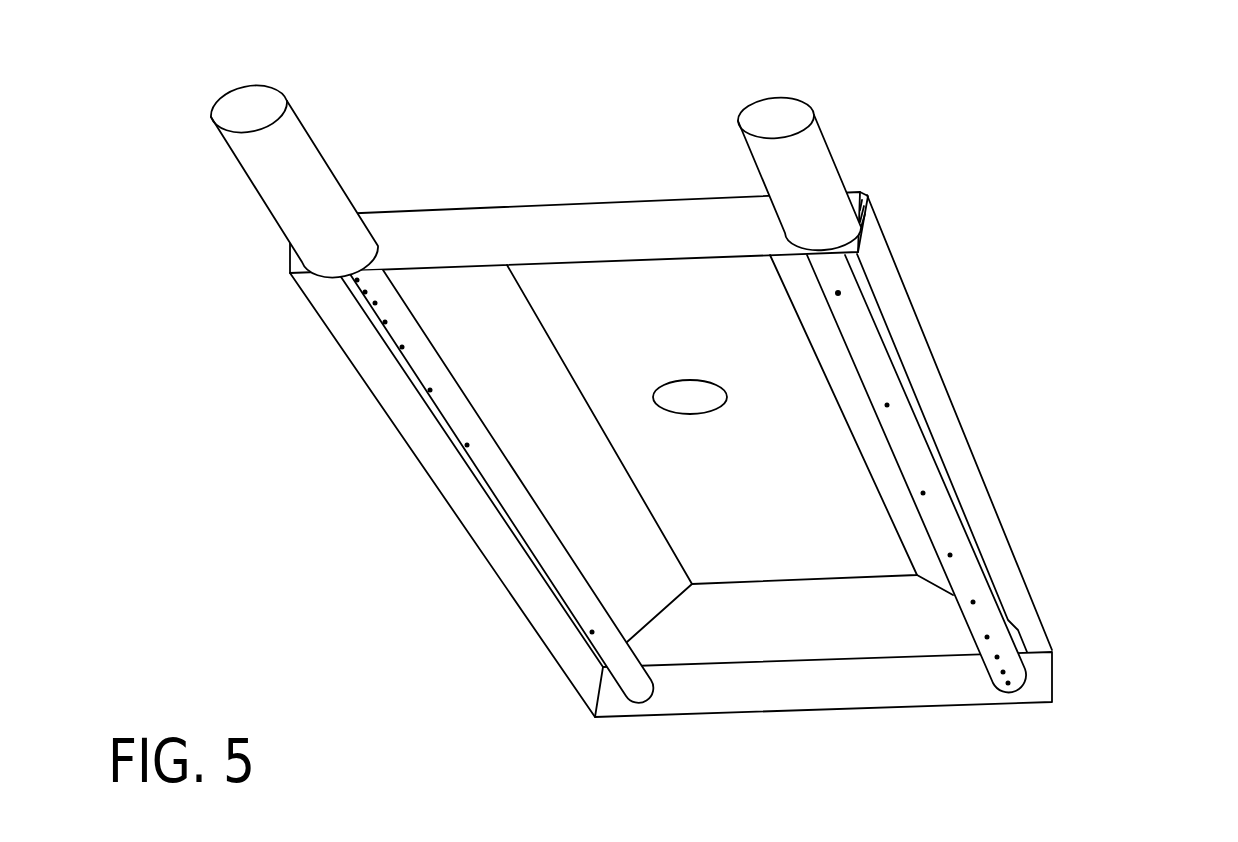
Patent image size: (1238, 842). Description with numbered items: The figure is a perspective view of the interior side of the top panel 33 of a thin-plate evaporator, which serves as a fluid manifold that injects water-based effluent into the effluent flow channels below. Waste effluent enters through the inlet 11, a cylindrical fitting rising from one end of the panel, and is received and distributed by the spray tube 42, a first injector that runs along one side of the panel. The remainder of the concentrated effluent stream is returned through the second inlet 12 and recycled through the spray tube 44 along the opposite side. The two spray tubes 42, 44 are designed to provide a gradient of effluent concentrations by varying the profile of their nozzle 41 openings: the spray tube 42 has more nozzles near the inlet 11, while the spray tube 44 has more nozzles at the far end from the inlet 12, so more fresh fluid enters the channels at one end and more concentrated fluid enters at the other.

The inlet 11 is at (258, 107).
The inlet 12 is at (778, 113).
The top panel 33 is at (1103, 140).
The nozzle 41 is at (840, 293).
The spray tube 42 is at (457, 417).
The spray tube 44 is at (903, 433).